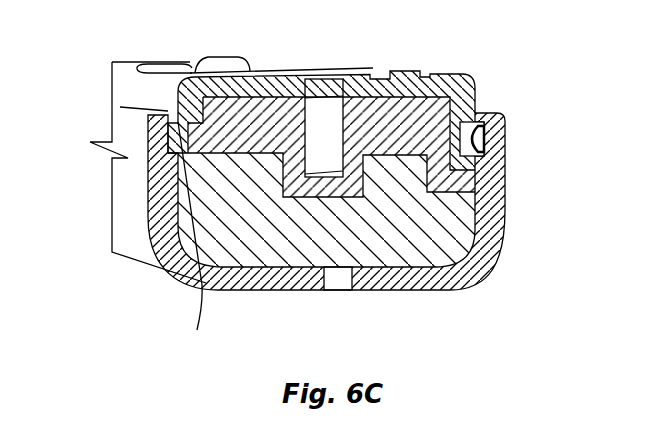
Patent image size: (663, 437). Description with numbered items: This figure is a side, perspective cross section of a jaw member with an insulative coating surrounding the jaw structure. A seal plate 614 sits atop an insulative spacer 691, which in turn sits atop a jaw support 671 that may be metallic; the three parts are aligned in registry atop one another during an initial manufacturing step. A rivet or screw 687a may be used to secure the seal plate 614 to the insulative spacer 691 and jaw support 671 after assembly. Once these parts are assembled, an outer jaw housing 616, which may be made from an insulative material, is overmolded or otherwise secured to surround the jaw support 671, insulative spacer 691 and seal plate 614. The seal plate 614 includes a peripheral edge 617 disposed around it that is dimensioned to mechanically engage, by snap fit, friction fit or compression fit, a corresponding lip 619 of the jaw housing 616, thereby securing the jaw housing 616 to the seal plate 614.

The seal plate 614 is at (463, 90).
The outer jaw housing 616 is at (496, 219).
The peripheral edge 617 is at (192, 238).
The lip 619 is at (171, 112).
The jaw support 671 is at (445, 248).
The rivet or screw 687a is at (482, 143).
The insulative spacer 691 is at (387, 117).